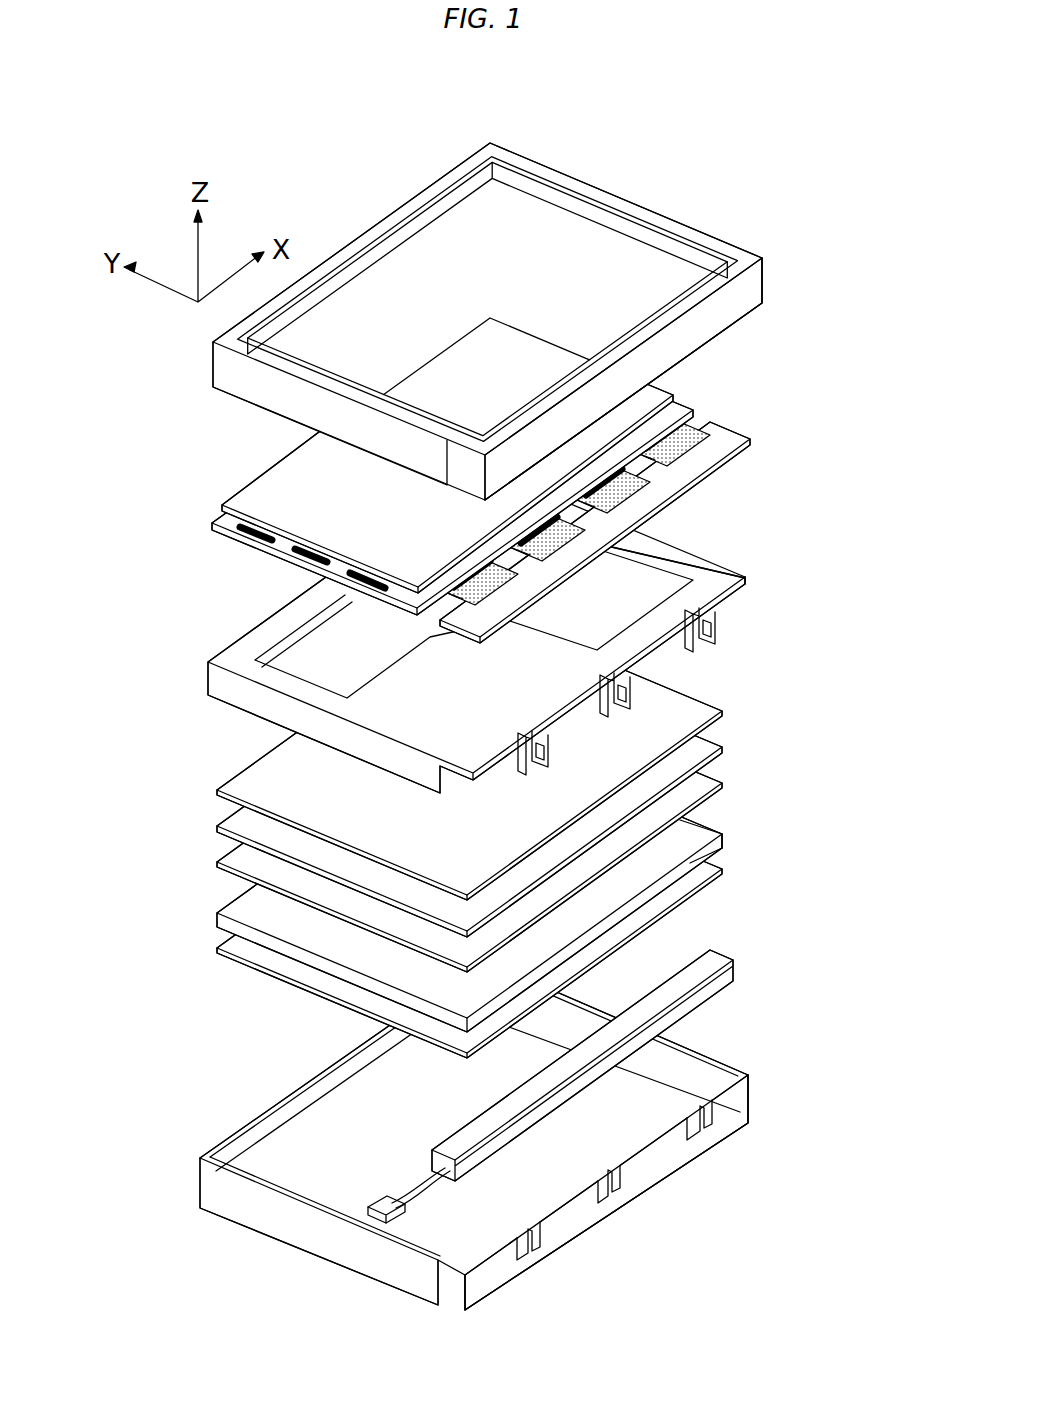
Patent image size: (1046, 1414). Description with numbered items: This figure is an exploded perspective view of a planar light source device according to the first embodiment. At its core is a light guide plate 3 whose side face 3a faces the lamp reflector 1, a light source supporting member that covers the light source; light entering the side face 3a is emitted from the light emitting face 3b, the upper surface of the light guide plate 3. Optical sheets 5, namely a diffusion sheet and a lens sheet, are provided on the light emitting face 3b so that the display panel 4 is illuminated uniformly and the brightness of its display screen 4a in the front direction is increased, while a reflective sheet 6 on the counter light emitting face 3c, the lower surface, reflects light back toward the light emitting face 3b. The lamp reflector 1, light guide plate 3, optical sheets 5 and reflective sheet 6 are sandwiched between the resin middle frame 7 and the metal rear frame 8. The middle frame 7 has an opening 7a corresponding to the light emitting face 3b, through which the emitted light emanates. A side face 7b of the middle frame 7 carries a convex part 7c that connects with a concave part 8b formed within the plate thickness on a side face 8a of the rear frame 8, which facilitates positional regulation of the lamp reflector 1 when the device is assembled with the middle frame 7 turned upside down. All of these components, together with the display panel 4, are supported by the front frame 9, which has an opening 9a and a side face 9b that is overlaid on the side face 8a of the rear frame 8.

The lamp reflector 1 is at (733, 975).
The light guide plate 3 is at (248, 913).
The side face 3a is at (717, 842).
The light emitting face 3b is at (700, 828).
The counter light emitting face 3c is at (713, 853).
The display panel 4 is at (248, 500).
The display screen 4a is at (655, 393).
The optical sheets 5 is at (200, 767).
The reflective sheet 6 is at (263, 962).
The middle frame 7 is at (713, 575).
The opening 7a is at (628, 580).
The side face 7b is at (745, 588).
The convex part 7c is at (718, 640).
The rear frame 8 is at (232, 1198).
The side face 8a is at (742, 1100).
The concave part 8b is at (697, 1132).
The front frame 9 is at (697, 232).
The opening 9a is at (573, 250).
The side face 9b is at (752, 284).